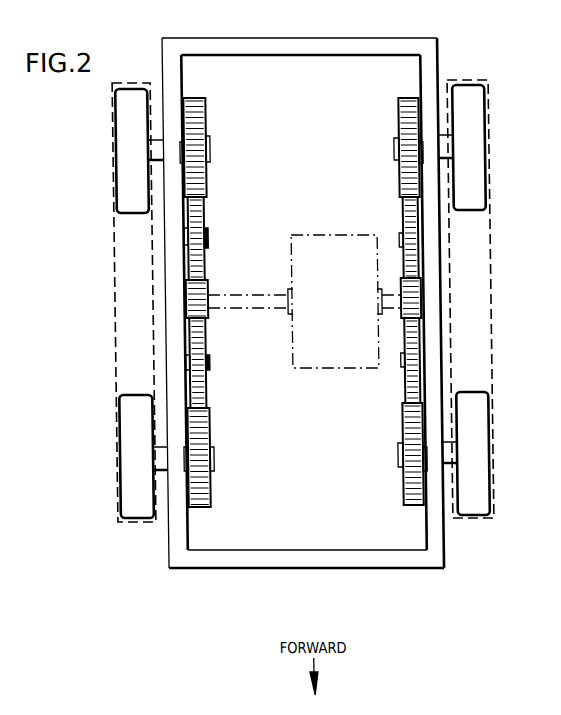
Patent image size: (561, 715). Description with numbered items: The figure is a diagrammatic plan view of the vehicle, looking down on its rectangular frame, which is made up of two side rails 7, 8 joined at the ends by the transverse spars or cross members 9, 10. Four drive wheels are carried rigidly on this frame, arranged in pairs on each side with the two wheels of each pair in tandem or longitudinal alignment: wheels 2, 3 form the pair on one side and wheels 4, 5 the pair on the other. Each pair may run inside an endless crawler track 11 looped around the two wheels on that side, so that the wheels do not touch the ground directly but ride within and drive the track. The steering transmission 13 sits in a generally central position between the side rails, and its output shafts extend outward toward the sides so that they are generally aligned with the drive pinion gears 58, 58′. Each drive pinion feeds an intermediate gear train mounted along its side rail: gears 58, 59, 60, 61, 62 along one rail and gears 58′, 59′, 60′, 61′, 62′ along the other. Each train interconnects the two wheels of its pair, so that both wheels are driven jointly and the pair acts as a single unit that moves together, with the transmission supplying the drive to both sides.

The wheel 2 is at (130, 154).
The wheel 3 is at (133, 438).
The wheel 4 is at (477, 118).
The wheel 5 is at (471, 468).
The side rail 7 is at (169, 223).
The side rail 8 is at (443, 327).
The cross member 9 is at (316, 48).
The cross member 10 is at (312, 562).
The track 11 is at (123, 306).
The steering transmission 13 is at (336, 240).
The drive pinion gear 58 is at (420, 292).
The drive pinion gear 58′ is at (206, 300).
The intermediate gear 59 is at (403, 195).
The intermediate gear 59′ is at (204, 206).
The intermediate gear 60 is at (404, 393).
The intermediate gear 60′ is at (204, 345).
The intermediate gear 61 is at (403, 106).
The intermediate gear 61′ is at (206, 108).
The intermediate gear 62 is at (408, 481).
The intermediate gear 62′ is at (204, 427).